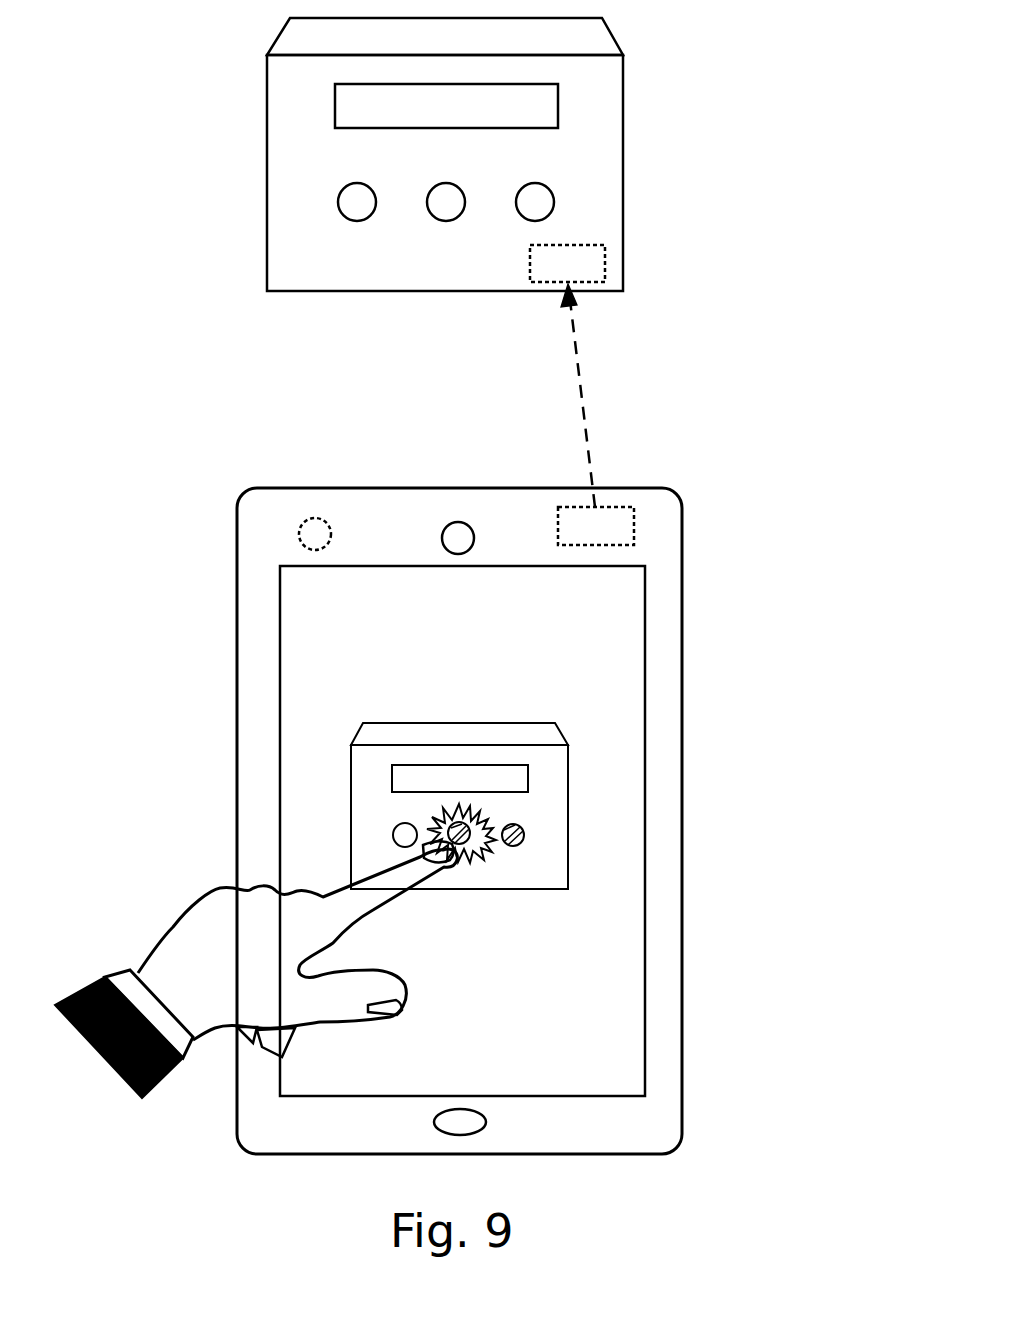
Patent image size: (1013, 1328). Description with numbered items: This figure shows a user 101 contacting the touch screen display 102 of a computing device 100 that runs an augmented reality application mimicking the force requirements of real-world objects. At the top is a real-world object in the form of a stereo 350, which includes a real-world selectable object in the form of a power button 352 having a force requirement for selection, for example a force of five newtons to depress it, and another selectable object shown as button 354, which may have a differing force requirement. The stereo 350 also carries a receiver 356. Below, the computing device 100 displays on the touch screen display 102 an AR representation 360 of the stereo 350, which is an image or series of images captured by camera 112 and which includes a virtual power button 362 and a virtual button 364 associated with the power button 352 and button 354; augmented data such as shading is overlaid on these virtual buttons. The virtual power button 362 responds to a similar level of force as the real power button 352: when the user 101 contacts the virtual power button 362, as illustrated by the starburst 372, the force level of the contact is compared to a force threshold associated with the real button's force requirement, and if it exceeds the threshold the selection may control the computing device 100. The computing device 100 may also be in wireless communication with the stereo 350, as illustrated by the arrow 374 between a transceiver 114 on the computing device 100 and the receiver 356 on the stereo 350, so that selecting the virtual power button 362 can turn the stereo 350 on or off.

The stereo 350 is at (182, 41).
The power button 352 is at (432, 214).
The button 354 is at (554, 202).
The receiver 356 is at (607, 268).
The arrow 374 is at (585, 411).
The computing device 100 is at (768, 492).
The touch screen display 102 is at (647, 1059).
The camera 112 is at (298, 538).
The transceiver 114 is at (634, 515).
The AR representation 360 is at (566, 692).
The virtual power button 362 is at (473, 853).
The virtual button 364 is at (525, 838).
The starburst 372 is at (432, 815).
The user 101 is at (173, 927).